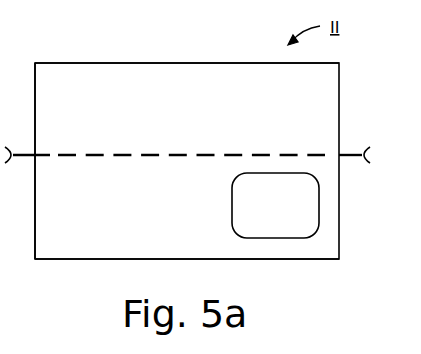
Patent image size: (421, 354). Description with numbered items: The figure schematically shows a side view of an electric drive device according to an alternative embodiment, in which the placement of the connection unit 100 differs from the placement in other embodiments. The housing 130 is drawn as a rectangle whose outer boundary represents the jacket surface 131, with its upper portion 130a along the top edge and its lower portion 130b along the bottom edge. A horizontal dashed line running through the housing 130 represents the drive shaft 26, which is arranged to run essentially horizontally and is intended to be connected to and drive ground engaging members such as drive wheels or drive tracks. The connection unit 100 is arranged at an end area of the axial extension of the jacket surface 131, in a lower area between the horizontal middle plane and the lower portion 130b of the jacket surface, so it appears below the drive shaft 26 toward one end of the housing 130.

The housing 130 is at (128, 63).
The jacket surface 131 is at (74, 95).
The upper portion of the jacket surface 130a is at (182, 63).
The lower portion of the jacket surface 130b is at (125, 258).
The drive shaft 26 is at (318, 153).
The connection unit 100 is at (273, 238).